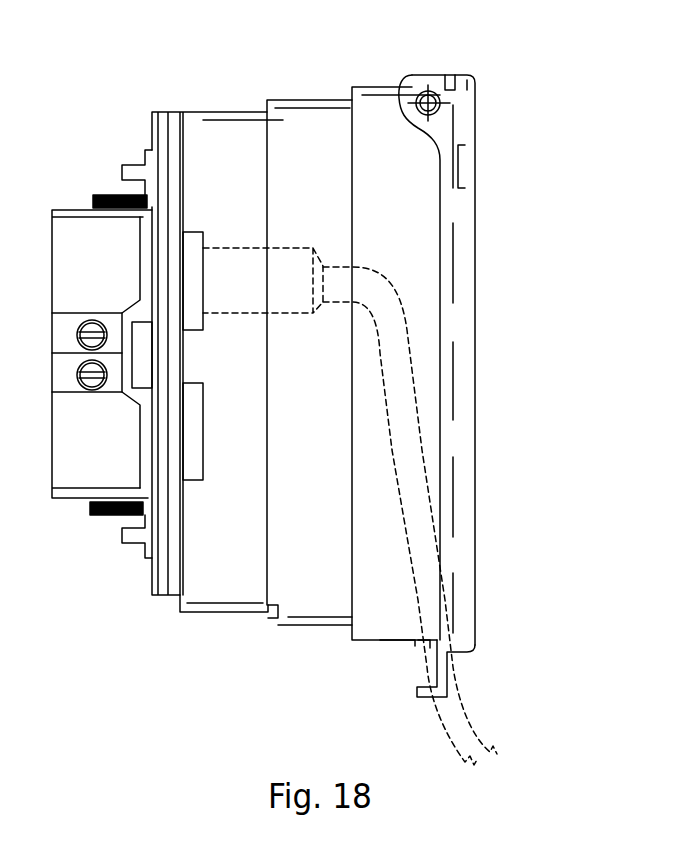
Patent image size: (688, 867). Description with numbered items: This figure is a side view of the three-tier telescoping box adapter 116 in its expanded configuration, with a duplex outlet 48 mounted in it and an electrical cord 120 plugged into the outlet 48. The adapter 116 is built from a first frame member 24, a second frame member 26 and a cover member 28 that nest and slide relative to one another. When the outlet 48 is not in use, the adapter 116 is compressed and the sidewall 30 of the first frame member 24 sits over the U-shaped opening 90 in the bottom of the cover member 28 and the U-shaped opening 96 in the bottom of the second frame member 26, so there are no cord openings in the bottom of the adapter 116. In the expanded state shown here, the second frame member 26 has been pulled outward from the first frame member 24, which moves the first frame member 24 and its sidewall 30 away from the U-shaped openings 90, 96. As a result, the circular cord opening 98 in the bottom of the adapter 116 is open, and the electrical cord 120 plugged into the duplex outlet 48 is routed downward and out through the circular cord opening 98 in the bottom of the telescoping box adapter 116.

The telescoping box adapter 116 is at (516, 166).
The first frame member 24 is at (236, 193).
The second frame member 26 is at (402, 200).
The cover member 28 is at (470, 328).
The duplex outlet 48 is at (109, 283).
The electrical cord 120 is at (402, 405).
The sidewall 30 is at (232, 605).
The U-shaped opening 96 is at (415, 641).
The circular cord opening 98 is at (422, 643).
The U-shaped opening 90 is at (452, 653).